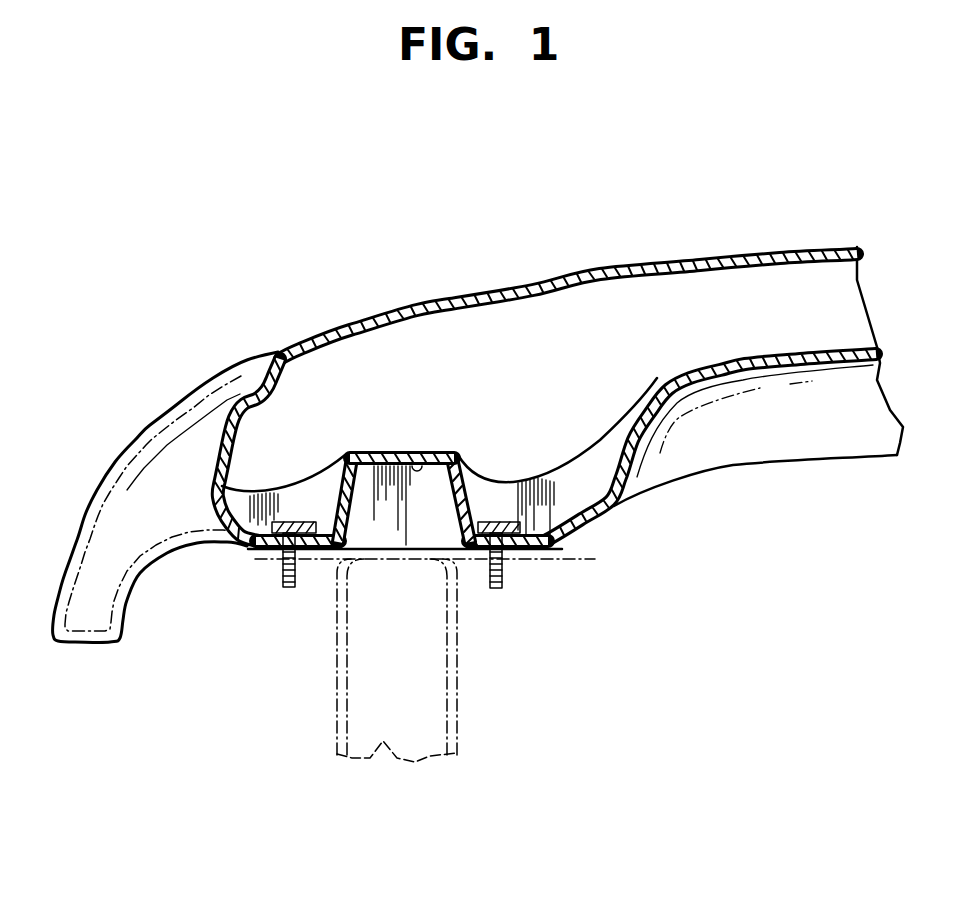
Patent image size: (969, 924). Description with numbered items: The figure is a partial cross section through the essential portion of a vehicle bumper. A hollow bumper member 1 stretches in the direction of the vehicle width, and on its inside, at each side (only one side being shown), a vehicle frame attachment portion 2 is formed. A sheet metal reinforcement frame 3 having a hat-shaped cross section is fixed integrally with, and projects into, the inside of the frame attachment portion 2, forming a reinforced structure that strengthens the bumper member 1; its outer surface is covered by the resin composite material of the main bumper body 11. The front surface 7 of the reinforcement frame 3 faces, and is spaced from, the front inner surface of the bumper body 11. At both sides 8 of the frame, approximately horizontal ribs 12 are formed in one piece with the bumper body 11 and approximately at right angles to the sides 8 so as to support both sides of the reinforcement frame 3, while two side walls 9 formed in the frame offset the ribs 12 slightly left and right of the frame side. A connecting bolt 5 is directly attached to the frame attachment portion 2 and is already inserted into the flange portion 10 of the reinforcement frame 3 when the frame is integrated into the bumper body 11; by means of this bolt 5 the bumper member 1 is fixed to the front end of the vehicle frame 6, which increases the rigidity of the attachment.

The bumper member 1 is at (563, 268).
The vehicle frame attachment portion 2 is at (467, 503).
The reinforcement frame 3 is at (439, 530).
The connecting bolt 5 is at (291, 592).
The vehicle frame 6 is at (335, 676).
The front surface 7 is at (427, 465).
The sides 8 is at (358, 513).
The side walls 9 is at (383, 508).
The flange portion 10 is at (267, 550).
The bumper body 11 is at (418, 302).
The ribs 12 is at (285, 502).